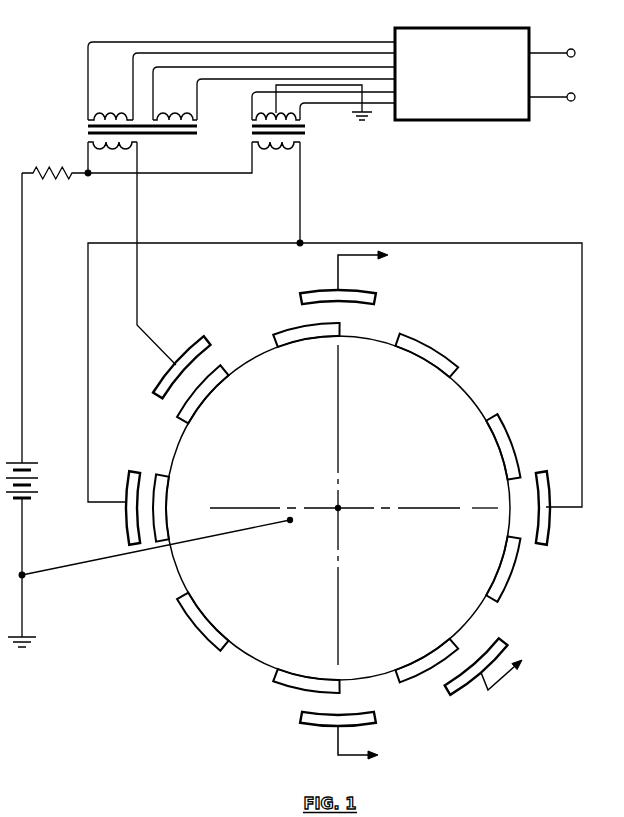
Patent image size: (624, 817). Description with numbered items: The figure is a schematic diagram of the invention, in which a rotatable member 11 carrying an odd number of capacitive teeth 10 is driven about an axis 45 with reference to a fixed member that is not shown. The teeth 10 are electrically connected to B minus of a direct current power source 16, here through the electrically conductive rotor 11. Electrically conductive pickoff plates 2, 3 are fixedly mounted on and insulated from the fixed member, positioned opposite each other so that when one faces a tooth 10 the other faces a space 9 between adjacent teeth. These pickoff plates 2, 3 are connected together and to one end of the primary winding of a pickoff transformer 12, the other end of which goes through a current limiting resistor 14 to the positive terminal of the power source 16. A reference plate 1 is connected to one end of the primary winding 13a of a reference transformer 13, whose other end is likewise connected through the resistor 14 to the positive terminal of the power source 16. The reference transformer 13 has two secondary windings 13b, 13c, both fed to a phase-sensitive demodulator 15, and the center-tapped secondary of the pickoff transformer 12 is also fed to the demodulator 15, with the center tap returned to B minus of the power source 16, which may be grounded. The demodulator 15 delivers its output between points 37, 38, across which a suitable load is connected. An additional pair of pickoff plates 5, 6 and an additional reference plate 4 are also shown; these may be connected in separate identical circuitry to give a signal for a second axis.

The reference plate 1 is at (195, 344).
The pickoff plate 2 is at (128, 478).
The pickoff plate 3 is at (548, 526).
The reference plate 4 is at (456, 688).
The pickoff plate 5 is at (358, 293).
The pickoff plate 6 is at (356, 724).
The space 9 is at (170, 433).
The teeth 10 is at (158, 508).
The rotatable member 11 is at (478, 392).
The pickoff transformer 12 is at (304, 130).
The reference transformer 13 is at (159, 123).
The primary winding 13a is at (132, 135).
The secondary winding 13b is at (110, 101).
The secondary winding 13c is at (175, 101).
The current limiting resistor 14 is at (65, 174).
The phase-sensitive demodulator 15 is at (517, 79).
The direct current power source 16 is at (36, 470).
The output point 37 is at (575, 53).
The output point 38 is at (575, 97).
The axis 45 is at (340, 510).